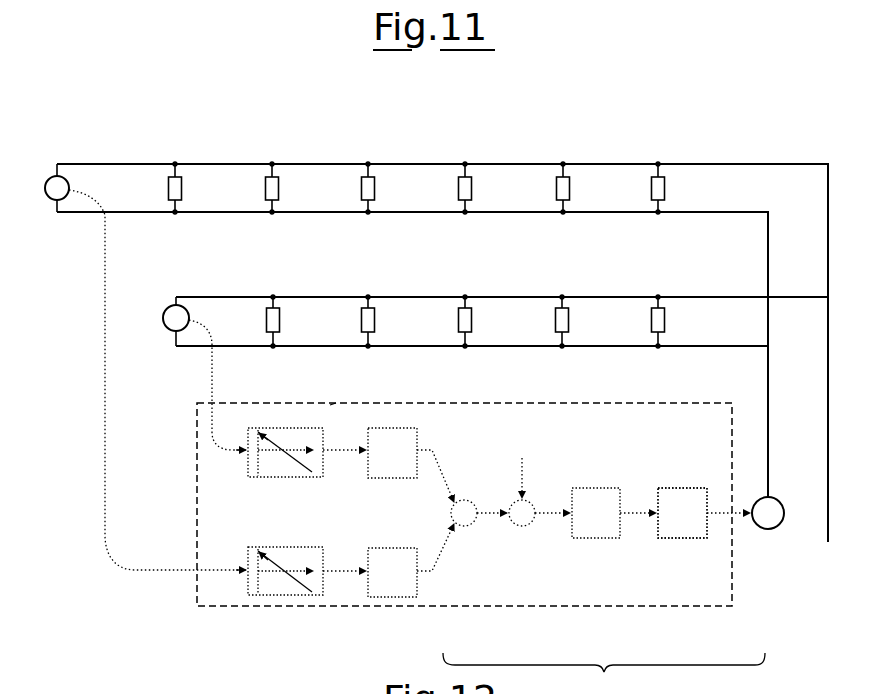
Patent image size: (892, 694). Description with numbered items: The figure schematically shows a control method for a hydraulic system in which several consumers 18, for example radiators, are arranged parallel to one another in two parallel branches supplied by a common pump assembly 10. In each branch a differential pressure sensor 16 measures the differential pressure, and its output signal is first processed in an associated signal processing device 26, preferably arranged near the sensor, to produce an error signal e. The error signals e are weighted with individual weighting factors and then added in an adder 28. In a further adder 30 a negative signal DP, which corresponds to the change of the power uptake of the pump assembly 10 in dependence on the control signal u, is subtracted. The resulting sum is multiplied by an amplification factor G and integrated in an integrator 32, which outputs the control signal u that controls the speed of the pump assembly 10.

The pump assembly 10 is at (769, 529).
The differential pressure sensor 16 is at (52, 176).
The consumer 18 is at (182, 190).
The signal processing device 26 is at (280, 478).
The adder 28 is at (466, 527).
The further adder 30 is at (524, 527).
The integrator 32 is at (680, 539).